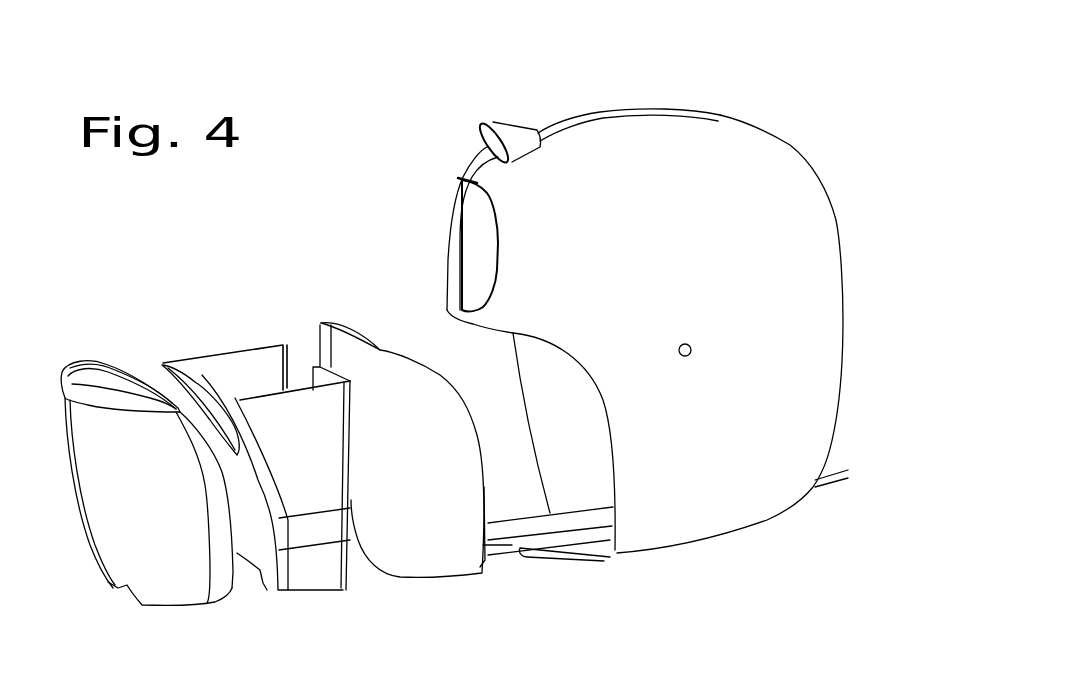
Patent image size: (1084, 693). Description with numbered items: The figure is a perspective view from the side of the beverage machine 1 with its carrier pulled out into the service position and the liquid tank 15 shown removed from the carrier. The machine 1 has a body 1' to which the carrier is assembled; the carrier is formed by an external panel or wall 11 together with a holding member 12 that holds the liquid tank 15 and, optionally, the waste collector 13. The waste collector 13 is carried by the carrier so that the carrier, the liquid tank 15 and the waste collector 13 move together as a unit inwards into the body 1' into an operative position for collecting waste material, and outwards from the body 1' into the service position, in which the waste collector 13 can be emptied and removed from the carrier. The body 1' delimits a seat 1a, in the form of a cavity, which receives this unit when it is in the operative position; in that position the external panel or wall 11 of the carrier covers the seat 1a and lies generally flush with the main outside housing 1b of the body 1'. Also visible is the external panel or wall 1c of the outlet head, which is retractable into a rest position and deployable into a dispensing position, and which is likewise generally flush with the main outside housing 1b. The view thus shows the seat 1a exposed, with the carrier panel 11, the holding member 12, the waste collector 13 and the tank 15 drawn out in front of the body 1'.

The beverage machine 1 is at (706, 259).
The body 1' is at (359, 280).
The seat 1a is at (546, 413).
The main outside housing 1b is at (668, 162).
The external panel or wall 1c is at (474, 245).
The external panel or wall 11 is at (410, 548).
The holding member 12 is at (512, 545).
The waste collector 13 is at (228, 385).
The liquid tank 15 is at (143, 558).